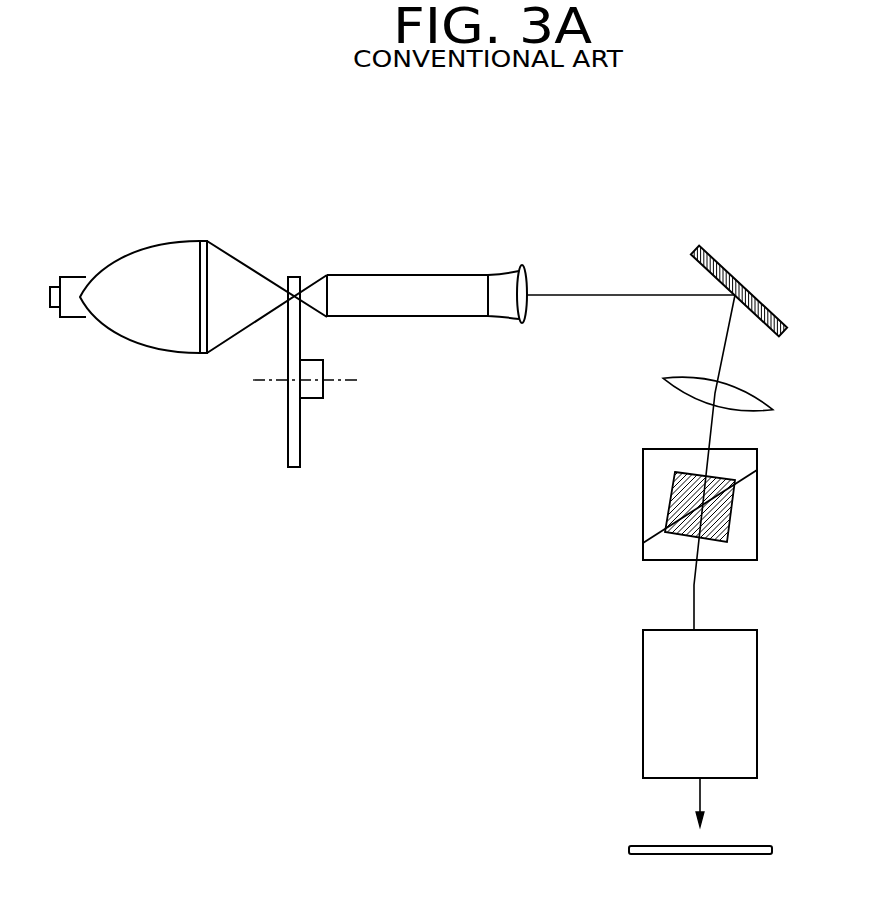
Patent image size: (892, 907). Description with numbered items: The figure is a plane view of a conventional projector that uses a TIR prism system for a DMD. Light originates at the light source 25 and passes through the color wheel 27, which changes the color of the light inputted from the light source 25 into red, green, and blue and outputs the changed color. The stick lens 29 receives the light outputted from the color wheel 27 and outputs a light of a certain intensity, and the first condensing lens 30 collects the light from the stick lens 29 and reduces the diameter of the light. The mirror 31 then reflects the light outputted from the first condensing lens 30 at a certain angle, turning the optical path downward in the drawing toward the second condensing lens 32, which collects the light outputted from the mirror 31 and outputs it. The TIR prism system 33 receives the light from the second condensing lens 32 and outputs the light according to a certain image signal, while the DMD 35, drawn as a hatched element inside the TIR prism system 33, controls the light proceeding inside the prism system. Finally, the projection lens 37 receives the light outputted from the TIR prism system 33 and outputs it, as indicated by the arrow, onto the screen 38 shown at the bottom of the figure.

The light source 25 is at (166, 243).
The color wheel 27 is at (288, 453).
The stick lens 29 is at (404, 280).
The first condensing lens 30 is at (523, 270).
The mirror 31 is at (757, 300).
The second condensing lens 32 is at (750, 400).
The TIR prism system 33 is at (755, 460).
The DMD 35 is at (726, 521).
The projection lens 37 is at (753, 703).
The screen 38 is at (772, 850).